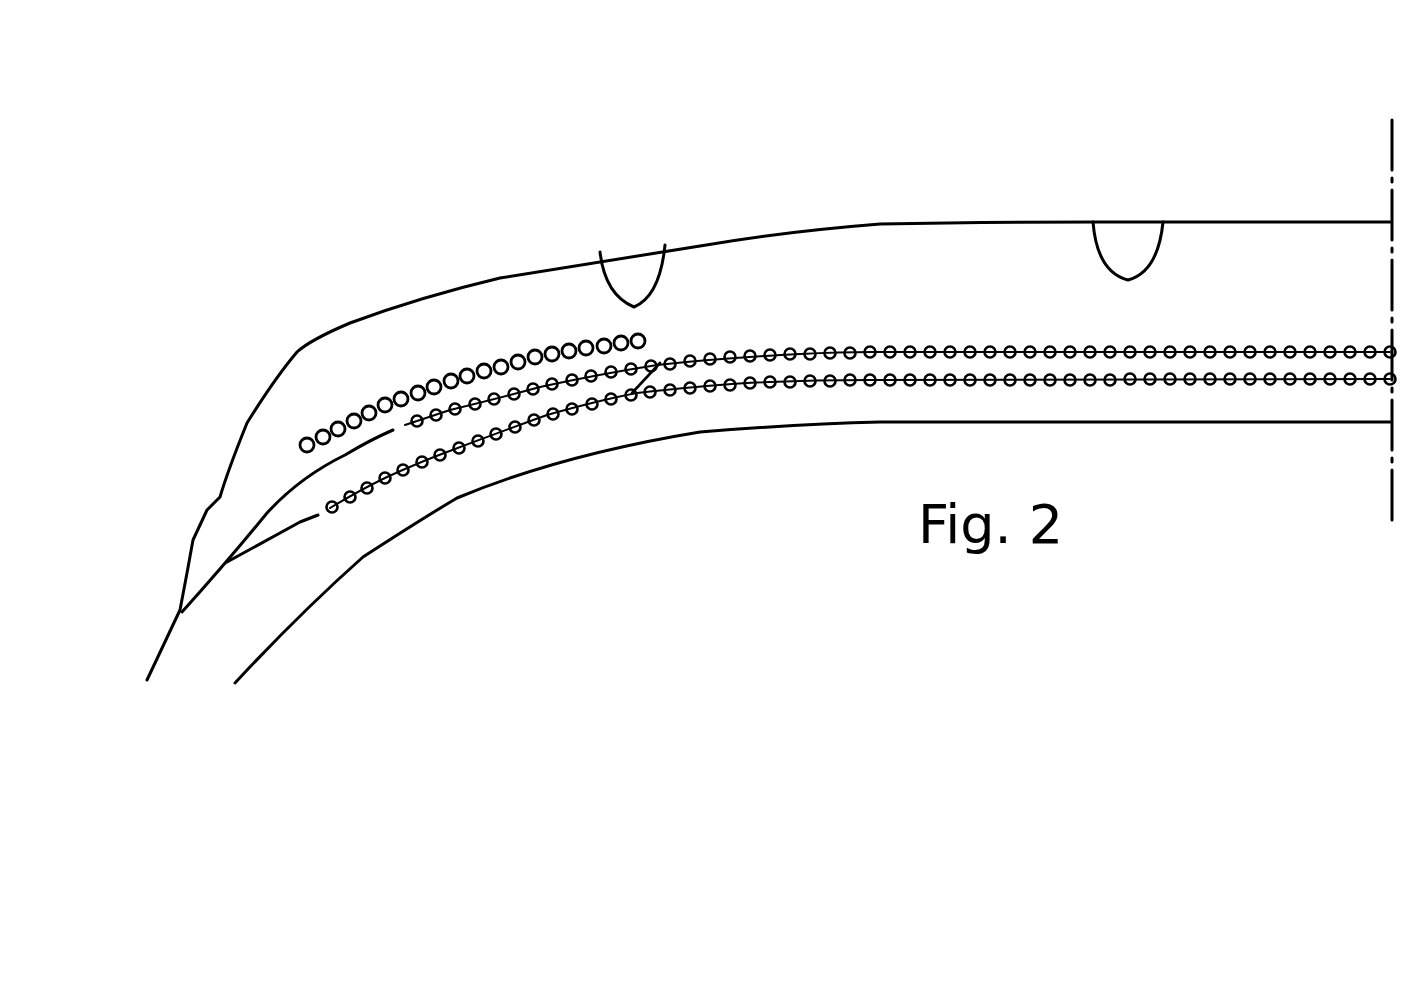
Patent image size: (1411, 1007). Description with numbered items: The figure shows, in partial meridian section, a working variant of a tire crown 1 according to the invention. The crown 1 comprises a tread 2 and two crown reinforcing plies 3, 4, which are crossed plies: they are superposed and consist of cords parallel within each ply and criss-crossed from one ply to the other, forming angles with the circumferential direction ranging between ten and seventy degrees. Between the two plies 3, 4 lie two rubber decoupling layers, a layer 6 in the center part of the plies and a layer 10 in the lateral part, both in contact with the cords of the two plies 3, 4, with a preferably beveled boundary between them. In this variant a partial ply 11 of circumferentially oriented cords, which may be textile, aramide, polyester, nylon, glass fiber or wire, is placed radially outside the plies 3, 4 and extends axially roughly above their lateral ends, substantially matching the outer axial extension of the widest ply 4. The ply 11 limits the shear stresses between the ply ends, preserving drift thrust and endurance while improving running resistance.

The crown 1 is at (720, 170).
The tread 2 is at (1018, 270).
The crown reinforcing ply 3 is at (1190, 350).
The crown reinforcing ply 4 is at (1220, 380).
The rubber decoupling layer 6 is at (1300, 362).
The rubber decoupling layer 10 is at (530, 403).
The partial ply 11 is at (453, 377).